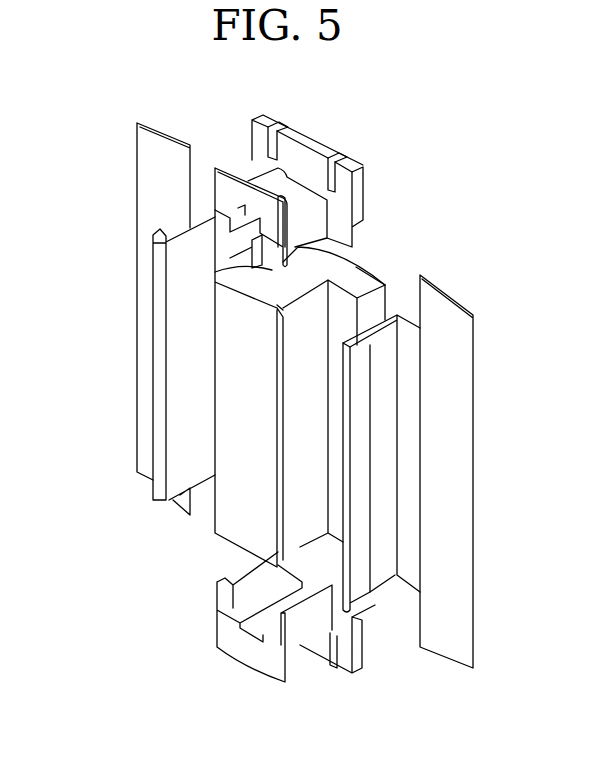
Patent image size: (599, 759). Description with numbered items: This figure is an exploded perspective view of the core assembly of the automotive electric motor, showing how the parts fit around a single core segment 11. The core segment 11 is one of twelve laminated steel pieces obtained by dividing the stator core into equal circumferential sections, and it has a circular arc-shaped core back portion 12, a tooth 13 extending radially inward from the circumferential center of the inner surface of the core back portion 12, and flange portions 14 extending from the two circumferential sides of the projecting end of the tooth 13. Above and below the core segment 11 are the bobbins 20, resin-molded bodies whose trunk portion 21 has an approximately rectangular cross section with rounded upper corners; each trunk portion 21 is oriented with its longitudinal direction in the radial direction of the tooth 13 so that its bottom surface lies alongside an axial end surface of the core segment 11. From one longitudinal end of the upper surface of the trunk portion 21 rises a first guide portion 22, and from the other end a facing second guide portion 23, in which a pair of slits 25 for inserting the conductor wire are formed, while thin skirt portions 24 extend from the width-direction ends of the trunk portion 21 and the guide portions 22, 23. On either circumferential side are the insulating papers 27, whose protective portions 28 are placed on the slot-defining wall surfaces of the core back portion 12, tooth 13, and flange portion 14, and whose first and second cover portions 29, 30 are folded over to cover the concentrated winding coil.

The core segment 11 is at (290, 365).
The core back portion 12 is at (430, 268).
The tooth 13 is at (270, 280).
The flange portion 14 is at (227, 345).
The bobbin 20 is at (264, 378).
The trunk portion 21 is at (277, 177).
The first guide portion 22 is at (225, 182).
The second guide portion 23 is at (297, 137).
The skirt portion 24 is at (362, 267).
The slit 25 is at (347, 233).
The insulating paper 27 is at (303, 395).
The protective portion 28 is at (383, 427).
The first cover portion 29 is at (365, 472).
The second cover portion 30 is at (452, 500).